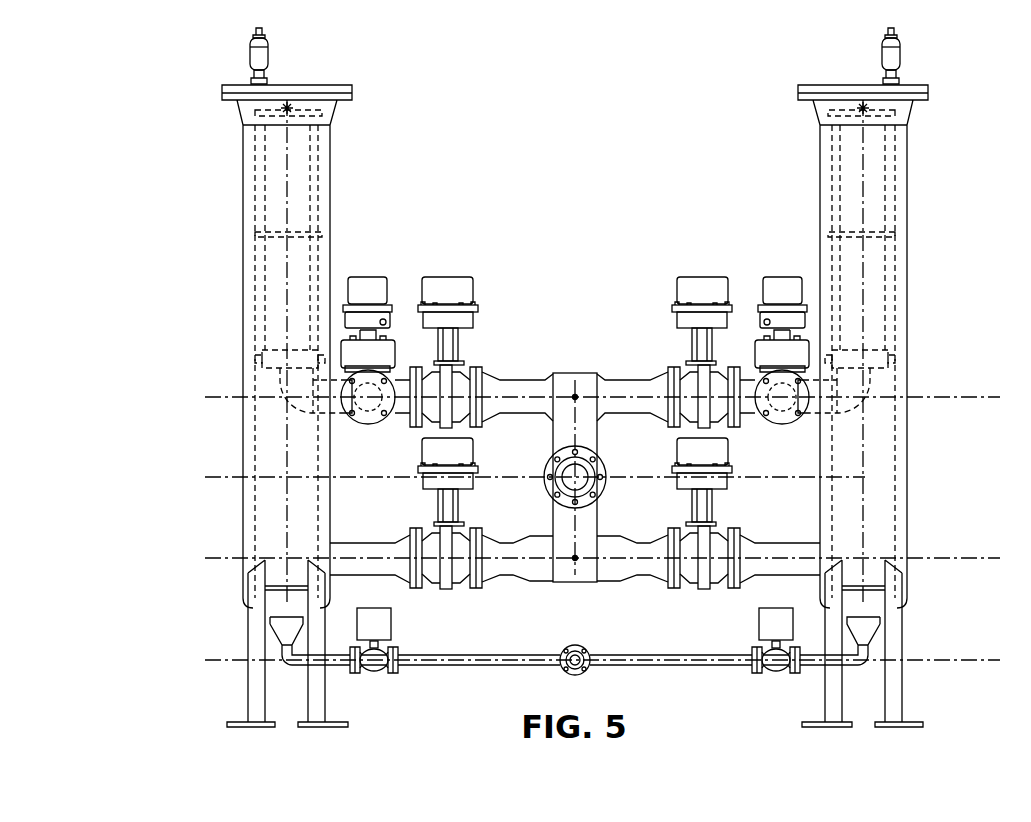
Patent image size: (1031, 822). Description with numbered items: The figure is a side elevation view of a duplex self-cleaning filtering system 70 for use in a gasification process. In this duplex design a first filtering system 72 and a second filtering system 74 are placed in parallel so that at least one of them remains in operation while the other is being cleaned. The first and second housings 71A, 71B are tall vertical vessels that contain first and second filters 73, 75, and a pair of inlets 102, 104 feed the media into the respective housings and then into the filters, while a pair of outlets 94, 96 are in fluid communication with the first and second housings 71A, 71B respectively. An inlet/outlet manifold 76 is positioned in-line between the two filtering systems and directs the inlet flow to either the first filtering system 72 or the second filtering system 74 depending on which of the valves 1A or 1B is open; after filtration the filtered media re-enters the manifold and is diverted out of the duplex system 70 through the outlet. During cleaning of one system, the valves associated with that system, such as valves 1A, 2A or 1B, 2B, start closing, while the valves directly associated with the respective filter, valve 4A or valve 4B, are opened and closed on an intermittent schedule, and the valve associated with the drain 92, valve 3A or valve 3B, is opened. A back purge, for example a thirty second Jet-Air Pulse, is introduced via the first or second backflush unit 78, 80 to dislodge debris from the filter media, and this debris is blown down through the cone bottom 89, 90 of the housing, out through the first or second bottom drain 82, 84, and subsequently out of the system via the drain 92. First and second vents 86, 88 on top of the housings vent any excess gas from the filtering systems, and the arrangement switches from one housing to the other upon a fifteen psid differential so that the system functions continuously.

The duplex filtering system 70 is at (184, 120).
The first housing 71A is at (238, 406).
The second housing 71B is at (875, 406).
The first filtering system 72 is at (243, 208).
The first filter 73 is at (243, 298).
The second filtering system 74 is at (820, 172).
The second filter 75 is at (890, 185).
The inlet/outlet manifold 76 is at (608, 482).
The first backflush unit 78 is at (397, 330).
The second backflush unit 80 is at (757, 340).
The first bottom drain 82 is at (376, 676).
The second bottom drain 84 is at (776, 676).
The first vent 86 is at (252, 52).
The second vent 88 is at (899, 52).
The cone bottom 89 is at (275, 630).
The cone bottom 90 is at (868, 625).
The drain 92 is at (586, 646).
The outlet 94 is at (455, 383).
The outlet 96 is at (690, 385).
The inlet 102 is at (430, 530).
The inlet 104 is at (738, 530).
The valve 1A is at (446, 513).
The valve 1B is at (704, 513).
The valve 2A is at (446, 352).
The valve 2B is at (704, 352).
The valve 3A is at (389, 666).
The valve 3B is at (764, 668).
The valve 4A is at (384, 328).
The valve 4B is at (774, 333).